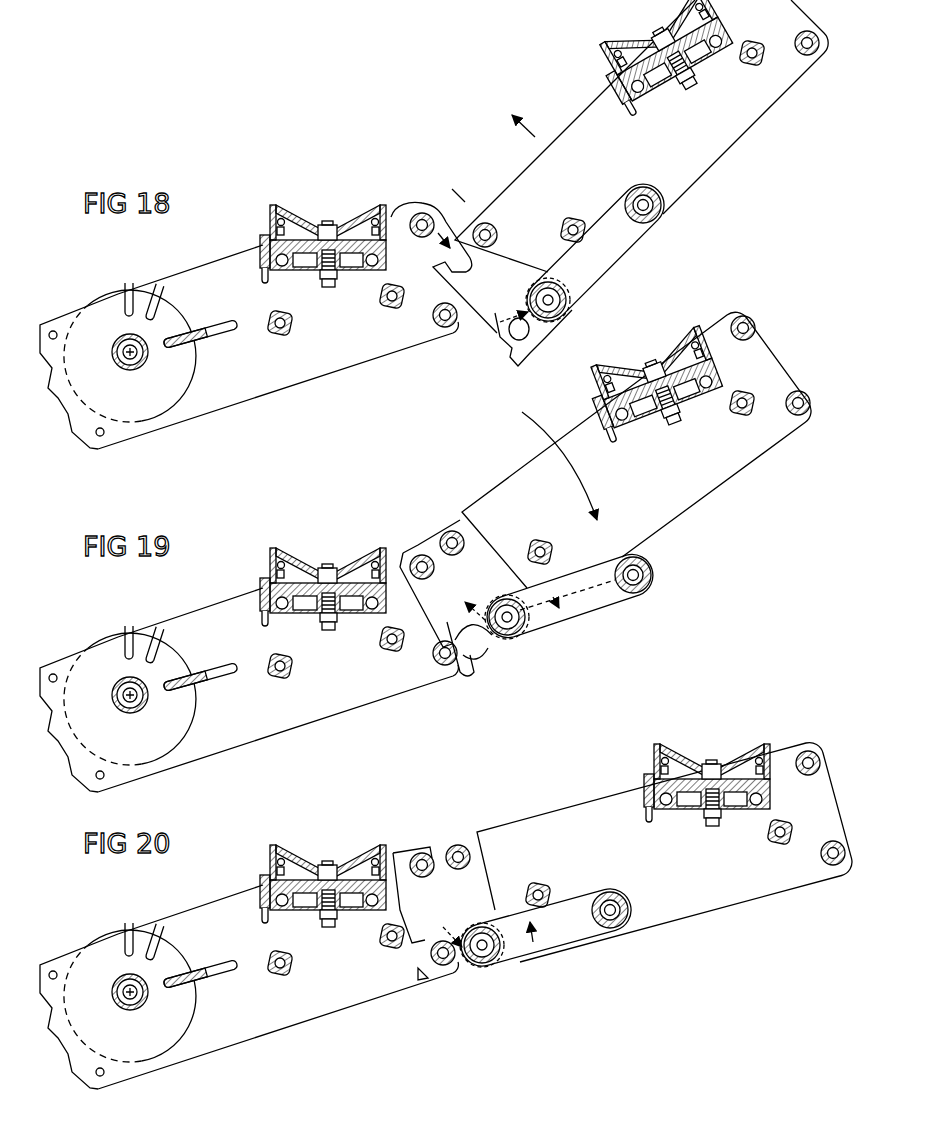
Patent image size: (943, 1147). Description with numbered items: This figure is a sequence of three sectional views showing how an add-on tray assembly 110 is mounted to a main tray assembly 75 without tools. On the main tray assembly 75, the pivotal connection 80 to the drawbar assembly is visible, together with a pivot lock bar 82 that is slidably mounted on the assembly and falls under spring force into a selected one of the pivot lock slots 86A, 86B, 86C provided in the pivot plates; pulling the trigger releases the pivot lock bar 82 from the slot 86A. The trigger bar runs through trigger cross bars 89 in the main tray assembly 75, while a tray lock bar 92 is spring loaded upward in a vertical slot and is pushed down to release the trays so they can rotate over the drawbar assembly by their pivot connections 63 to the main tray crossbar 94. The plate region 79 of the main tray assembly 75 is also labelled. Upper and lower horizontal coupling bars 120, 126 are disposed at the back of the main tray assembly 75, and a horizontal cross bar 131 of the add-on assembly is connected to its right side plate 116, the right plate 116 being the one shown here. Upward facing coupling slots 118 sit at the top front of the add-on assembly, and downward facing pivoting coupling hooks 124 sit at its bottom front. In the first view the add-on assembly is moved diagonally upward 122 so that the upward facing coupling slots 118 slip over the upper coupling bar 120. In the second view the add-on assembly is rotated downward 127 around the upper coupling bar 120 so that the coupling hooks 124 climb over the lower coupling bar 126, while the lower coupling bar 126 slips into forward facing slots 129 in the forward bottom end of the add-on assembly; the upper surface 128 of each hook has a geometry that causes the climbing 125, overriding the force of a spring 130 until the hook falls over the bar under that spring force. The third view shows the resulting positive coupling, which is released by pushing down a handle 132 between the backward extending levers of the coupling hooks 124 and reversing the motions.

In FIG. 18, the main tray assembly 75 is at (293, 404).
In FIG. 19, the main tray assembly 75 is at (177, 690).
In FIG. 20, the main tray assembly 75 is at (177, 987).
In FIG. 18, the plate surface 79 is at (352, 351).
In FIG. 19, the plate surface 79 is at (278, 728).
In FIG. 20, the plate surface 79 is at (278, 1025).
In FIG. 18, the pivotal connection 80 is at (126, 353).
In FIG. 19, the pivotal connection 80 is at (114, 702).
In FIG. 20, the pivotal connection 80 is at (114, 999).
In FIG. 18, the pivot lock bar 82 is at (177, 348).
In FIG. 19, the pivot lock bar 82 is at (200, 694).
In FIG. 20, the pivot lock bar 82 is at (200, 991).
In FIG. 18, the pivot lock slot 86A is at (195, 347).
In FIG. 19, the pivot lock slot 86A is at (167, 698).
In FIG. 20, the pivot lock slot 86A is at (167, 995).
In FIG. 18, the pivot lock slot 86B is at (149, 290).
In FIG. 19, the pivot lock slot 86B is at (165, 622).
In FIG. 20, the pivot lock slot 86B is at (165, 919).
In FIG. 18, the pivot lock slot 86C is at (118, 291).
In FIG. 19, the pivot lock slot 86C is at (115, 628).
In FIG. 20, the pivot lock slot 86C is at (115, 925).
In FIG. 18, the trigger cross bars 89 is at (280, 333).
In FIG. 19, the trigger cross bars 89 is at (337, 667).
In FIG. 20, the trigger cross bars 89 is at (337, 964).
In FIG. 18, the tray lock bar 92 is at (263, 256).
In FIG. 19, the tray lock bar 92 is at (248, 603).
In FIG. 20, the tray lock bar 92 is at (248, 900).
In FIG. 18, the main tray crossbar 94 is at (287, 273).
In FIG. 19, the main tray crossbar 94 is at (328, 598).
In FIG. 20, the main tray crossbar 94 is at (328, 895).
In FIG. 18, the pivot connections 63 is at (327, 224).
In FIG. 19, the pivot connections 63 is at (330, 581).
In FIG. 20, the pivot connections 63 is at (330, 878).
In FIG. 18, the add-on tray assembly 110 is at (734, 181).
In FIG. 19, the add-on tray assembly 110 is at (732, 510).
In FIG. 20, the add-on tray assembly 110 is at (713, 932).
In FIG. 18, the right side plate 116 is at (686, 144).
In FIG. 19, the right side plate 116 is at (678, 485).
In FIG. 20, the right side plate 116 is at (678, 871).
In FIG. 18, the upward facing coupling slots 118 is at (470, 267).
In FIG. 19, the upward facing coupling slots 118 is at (430, 531).
In FIG. 20, the upward facing coupling slots 118 is at (411, 852).
In FIG. 18, the upper horizontal coupling bar 120 is at (412, 217).
In FIG. 19, the upper horizontal coupling bar 120 is at (410, 554).
In FIG. 20, the upper horizontal coupling bar 120 is at (422, 845).
In FIG. 18, the diagonally upward movement 122 is at (447, 186).
In FIG. 18, the pivoting coupling hooks 124 is at (507, 317).
In FIG. 19, the pivoting coupling hooks 124 is at (462, 600).
In FIG. 20, the pivoting coupling hooks 124 is at (443, 925).
In FIG. 19, the climbing 125 is at (483, 650).
In FIG. 18, the lower horizontal coupling bar 126 is at (440, 328).
In FIG. 19, the lower horizontal coupling bar 126 is at (435, 677).
In FIG. 20, the lower horizontal coupling bar 126 is at (447, 970).
In FIG. 19, the downward rotation 127 is at (559, 466).
In FIG. 19, the upper surface 128 is at (442, 631).
In FIG. 18, the forward facing slots 129 is at (497, 341).
In FIG. 19, the forward facing slots 129 is at (473, 664).
In FIG. 20, the forward facing slots 129 is at (420, 981).
In FIG. 18, the spring 130 is at (570, 312).
In FIG. 19, the spring 130 is at (512, 642).
In FIG. 20, the spring 130 is at (491, 961).
In FIG. 18, the horizontal cross bar 131 is at (497, 221).
In FIG. 19, the horizontal cross bar 131 is at (463, 531).
In FIG. 20, the horizontal cross bar 131 is at (471, 848).
In FIG. 19, the handle 132 is at (652, 580).
In FIG. 20, the handle 132 is at (633, 930).